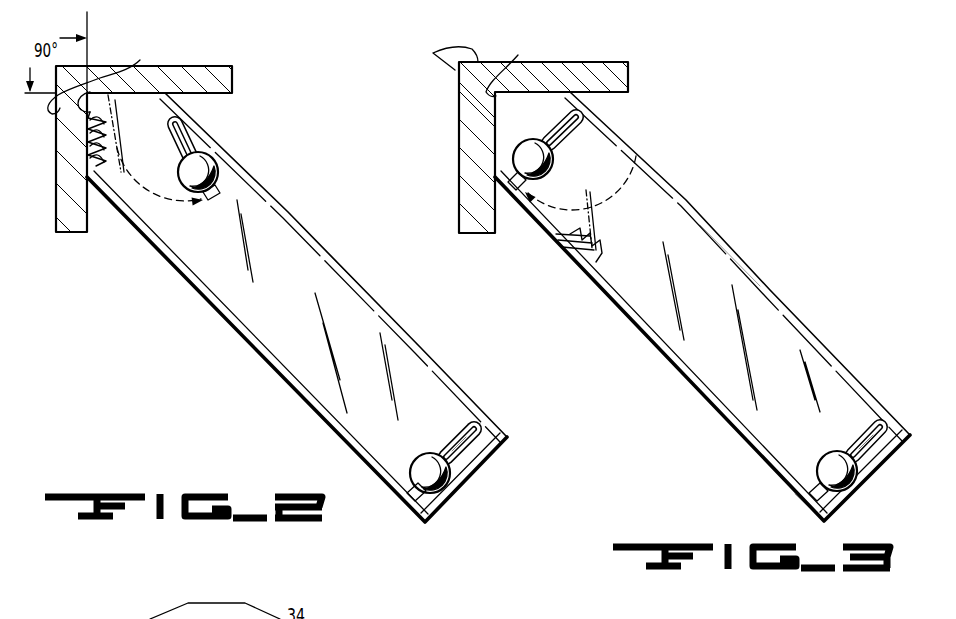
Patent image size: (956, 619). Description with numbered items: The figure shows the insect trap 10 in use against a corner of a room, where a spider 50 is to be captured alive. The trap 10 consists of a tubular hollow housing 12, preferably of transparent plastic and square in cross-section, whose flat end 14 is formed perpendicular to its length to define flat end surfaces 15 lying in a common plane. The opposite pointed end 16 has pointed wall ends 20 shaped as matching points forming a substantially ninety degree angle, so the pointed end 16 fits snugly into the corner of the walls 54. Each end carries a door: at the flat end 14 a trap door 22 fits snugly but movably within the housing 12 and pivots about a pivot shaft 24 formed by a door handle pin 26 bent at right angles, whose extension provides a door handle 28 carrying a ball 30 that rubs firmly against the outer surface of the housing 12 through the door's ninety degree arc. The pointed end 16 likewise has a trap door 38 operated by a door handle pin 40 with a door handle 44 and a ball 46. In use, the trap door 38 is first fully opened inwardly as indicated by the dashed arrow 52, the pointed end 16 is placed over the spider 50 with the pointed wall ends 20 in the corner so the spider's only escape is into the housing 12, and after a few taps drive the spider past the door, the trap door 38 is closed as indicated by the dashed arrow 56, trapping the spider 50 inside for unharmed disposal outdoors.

In FIG. 2, the trap 10 is at (336, 241).
In FIG. 3, the trap 10 is at (731, 234).
In FIG. 2, the housing 12 is at (353, 278).
In FIG. 3, the housing 12 is at (749, 270).
In FIG. 2, the flat end 14 is at (405, 517).
In FIG. 3, the flat end 14 is at (806, 517).
In FIG. 2, the flat end surfaces 15 is at (455, 492).
In FIG. 3, the flat end surfaces 15 is at (857, 492).
In FIG. 2, the pointed end 16 is at (146, 111).
In FIG. 3, the pointed end 16 is at (553, 101).
In FIG. 2, the pointed wall ends 20 is at (136, 93).
In FIG. 3, the pointed wall ends 20 is at (517, 92).
In FIG. 2, the trap door 22 is at (463, 446).
In FIG. 3, the trap door 22 is at (864, 442).
In FIG. 2, the pivot shaft 24 is at (472, 425).
In FIG. 3, the pivot shaft 24 is at (878, 421).
In FIG. 2, the door handle pin 26 is at (463, 452).
In FIG. 3, the door handle pin 26 is at (863, 448).
In FIG. 2, the door handle 28 is at (453, 442).
In FIG. 3, the door handle 28 is at (861, 443).
In FIG. 2, the ball 30 is at (420, 457).
In FIG. 3, the ball 30 is at (828, 457).
In FIG. 2, the trap door 38 is at (216, 167).
In FIG. 3, the trap door 38 is at (554, 136).
In FIG. 2, the door handle pin 40 is at (224, 151).
In FIG. 3, the door handle pin 40 is at (571, 147).
In FIG. 2, the door handle 44 is at (187, 139).
In FIG. 3, the door handle 44 is at (565, 144).
In FIG. 3, the ball 46 is at (556, 175).
In FIG. 2, the spider 50 is at (104, 141).
In FIG. 3, the spider 50 is at (601, 248).
In FIG. 2, the dashed arrow 52 is at (154, 197).
In FIG. 2, the walls 54 is at (55, 97).
In FIG. 3, the walls 54 is at (434, 53).
In FIG. 3, the dashed arrow 56 is at (610, 205).